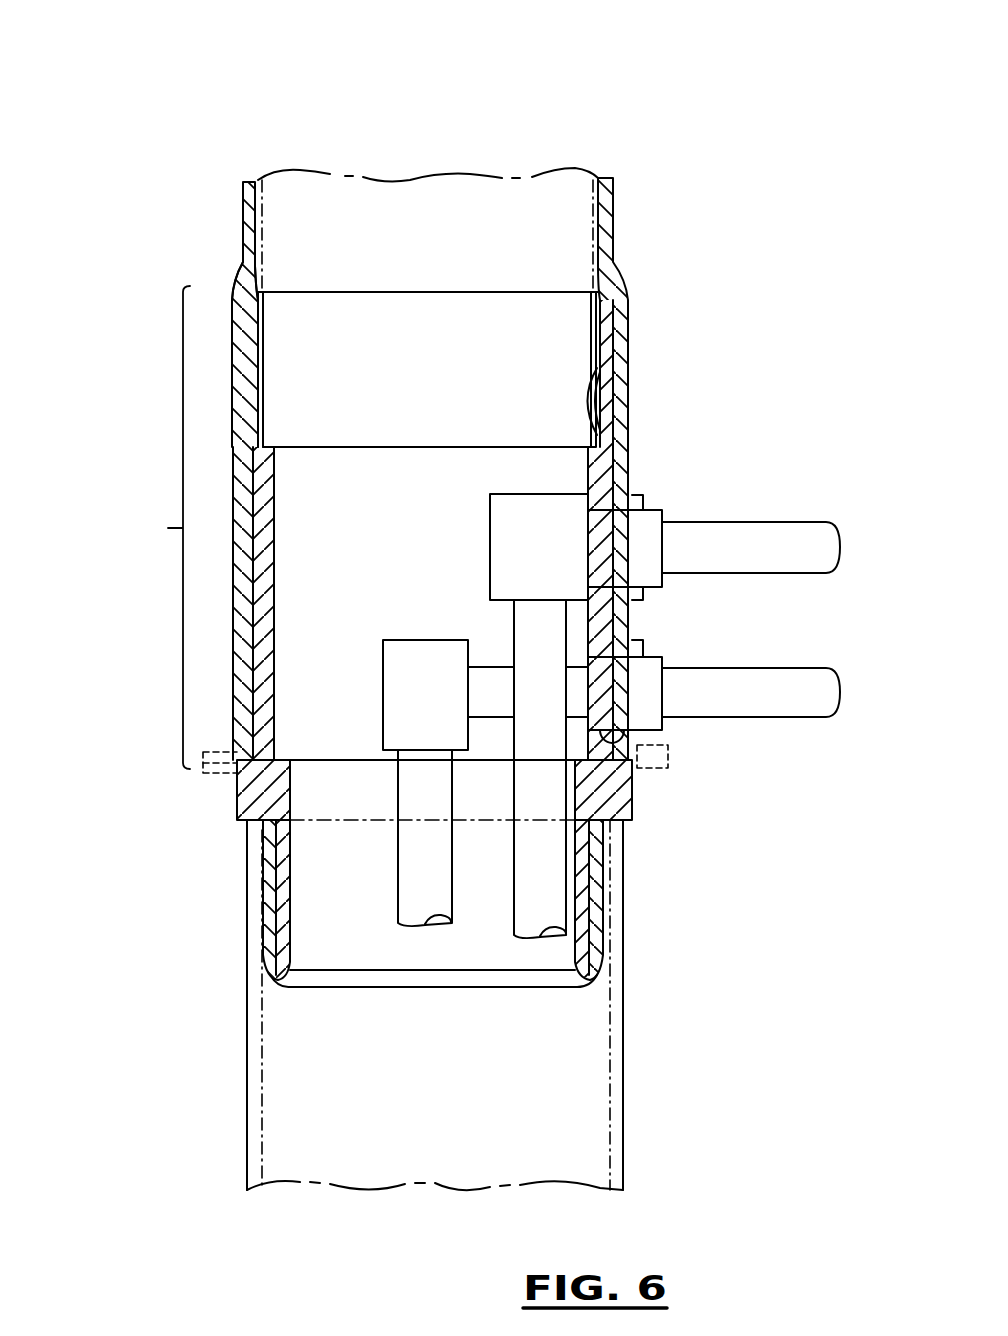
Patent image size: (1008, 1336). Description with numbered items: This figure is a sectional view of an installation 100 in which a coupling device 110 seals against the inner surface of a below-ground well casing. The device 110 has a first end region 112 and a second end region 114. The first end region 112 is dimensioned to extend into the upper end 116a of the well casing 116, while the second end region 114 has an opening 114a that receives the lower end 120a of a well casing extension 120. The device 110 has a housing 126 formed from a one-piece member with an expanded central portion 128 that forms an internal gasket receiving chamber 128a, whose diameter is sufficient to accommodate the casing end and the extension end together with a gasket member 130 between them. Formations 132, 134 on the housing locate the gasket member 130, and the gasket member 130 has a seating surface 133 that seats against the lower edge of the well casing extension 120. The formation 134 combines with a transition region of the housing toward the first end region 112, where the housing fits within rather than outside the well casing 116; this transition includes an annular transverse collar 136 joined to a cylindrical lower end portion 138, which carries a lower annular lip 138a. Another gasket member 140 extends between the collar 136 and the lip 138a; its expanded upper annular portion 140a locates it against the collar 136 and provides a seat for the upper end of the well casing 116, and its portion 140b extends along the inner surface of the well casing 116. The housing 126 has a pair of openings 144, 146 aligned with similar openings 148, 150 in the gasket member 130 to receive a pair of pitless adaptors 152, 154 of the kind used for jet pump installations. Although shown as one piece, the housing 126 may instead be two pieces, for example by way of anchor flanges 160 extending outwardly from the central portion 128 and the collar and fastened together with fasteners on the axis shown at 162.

The installation 100 is at (770, 294).
The coupling device 110 is at (772, 408).
The first end region 112 is at (683, 872).
The second end region 114 is at (652, 230).
The opening 114a is at (536, 203).
The well casing 116 is at (667, 1108).
The upper end of well casing 116a is at (623, 918).
The well casing extension 120 is at (280, 146).
The lower end of well casing extension 120a is at (300, 225).
The housing 126 is at (150, 465).
The expanded central portion 128 is at (196, 527).
The gasket receiving chamber 128a is at (274, 588).
The gasket member 130 is at (250, 348).
The formation 132 is at (243, 268).
The seating surface 133 is at (620, 350).
The formation 134 is at (233, 783).
The annular transverse collar 136 is at (287, 760).
The cylindrical lower end portion 138 is at (292, 890).
The lower annular lip 138a is at (285, 987).
The gasket member 140 is at (605, 855).
The expanded upper annular portion 140a is at (632, 798).
The portion of gasket member 140b is at (600, 938).
The opening 144 is at (615, 500).
The opening 146 is at (615, 640).
The opening 148 is at (632, 490).
The opening 150 is at (630, 736).
The pitless adaptor 152 is at (700, 506).
The pitless adaptor 154 is at (702, 655).
The anchor flanges 160 is at (207, 770).
The fastener axis 162 is at (223, 782).